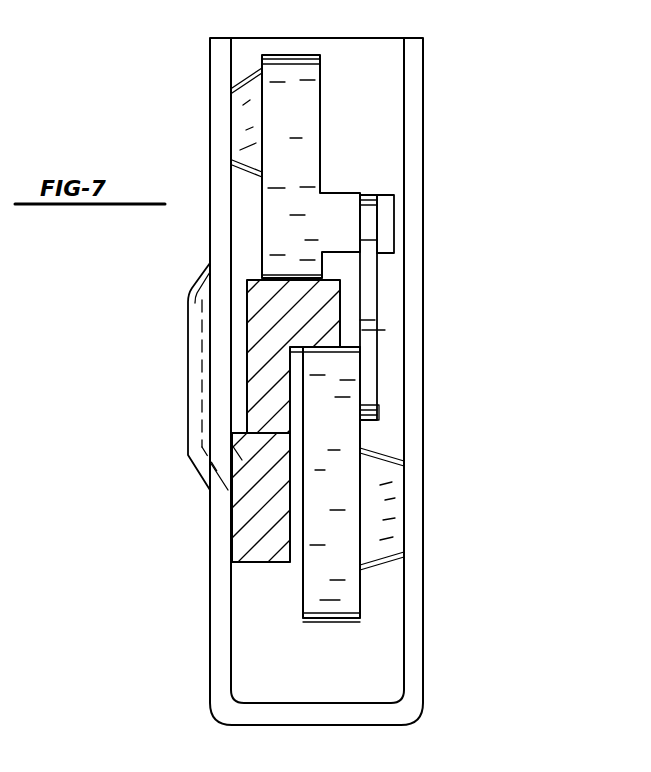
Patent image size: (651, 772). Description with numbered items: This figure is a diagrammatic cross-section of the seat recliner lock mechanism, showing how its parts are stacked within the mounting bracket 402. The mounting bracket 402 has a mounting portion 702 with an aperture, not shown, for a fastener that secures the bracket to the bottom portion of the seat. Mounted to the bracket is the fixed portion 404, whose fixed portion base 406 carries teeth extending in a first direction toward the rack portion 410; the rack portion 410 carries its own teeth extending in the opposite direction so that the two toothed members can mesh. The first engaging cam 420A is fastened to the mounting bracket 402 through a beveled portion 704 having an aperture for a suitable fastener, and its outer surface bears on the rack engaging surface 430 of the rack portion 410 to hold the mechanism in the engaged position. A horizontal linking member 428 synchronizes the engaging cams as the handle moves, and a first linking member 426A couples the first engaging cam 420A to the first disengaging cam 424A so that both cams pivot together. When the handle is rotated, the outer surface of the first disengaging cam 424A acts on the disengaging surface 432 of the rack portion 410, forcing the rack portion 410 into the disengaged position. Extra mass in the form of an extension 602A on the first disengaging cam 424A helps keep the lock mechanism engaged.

The mounting bracket 402 is at (210, 70).
The beveled portion 704 is at (247, 58).
The first engaging cam 420A is at (318, 55).
The horizontal linking member 428 is at (385, 192).
The first linking member 426A is at (382, 332).
The rack portion 410 is at (247, 328).
The fixed portion 404 is at (250, 562).
The disengaging surface 432 is at (335, 372).
The rack engaging surface 430 is at (273, 262).
The mounting portion 702 is at (176, 500).
The fixed portion base 406 is at (392, 580).
The first disengaging cam 424A is at (433, 655).
The extension 602A is at (340, 618).